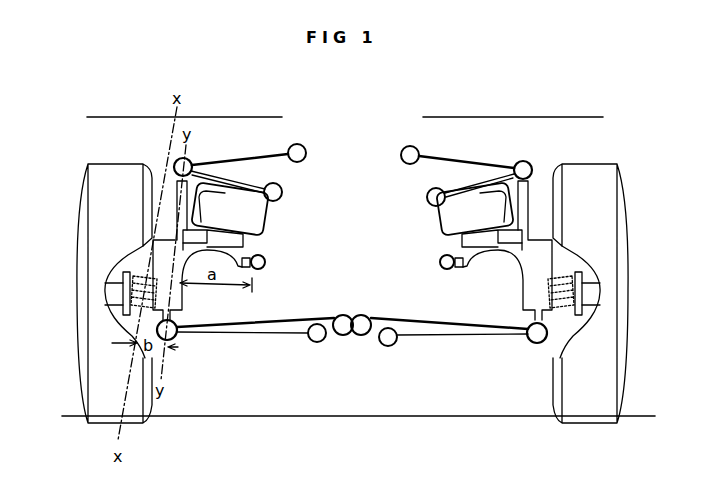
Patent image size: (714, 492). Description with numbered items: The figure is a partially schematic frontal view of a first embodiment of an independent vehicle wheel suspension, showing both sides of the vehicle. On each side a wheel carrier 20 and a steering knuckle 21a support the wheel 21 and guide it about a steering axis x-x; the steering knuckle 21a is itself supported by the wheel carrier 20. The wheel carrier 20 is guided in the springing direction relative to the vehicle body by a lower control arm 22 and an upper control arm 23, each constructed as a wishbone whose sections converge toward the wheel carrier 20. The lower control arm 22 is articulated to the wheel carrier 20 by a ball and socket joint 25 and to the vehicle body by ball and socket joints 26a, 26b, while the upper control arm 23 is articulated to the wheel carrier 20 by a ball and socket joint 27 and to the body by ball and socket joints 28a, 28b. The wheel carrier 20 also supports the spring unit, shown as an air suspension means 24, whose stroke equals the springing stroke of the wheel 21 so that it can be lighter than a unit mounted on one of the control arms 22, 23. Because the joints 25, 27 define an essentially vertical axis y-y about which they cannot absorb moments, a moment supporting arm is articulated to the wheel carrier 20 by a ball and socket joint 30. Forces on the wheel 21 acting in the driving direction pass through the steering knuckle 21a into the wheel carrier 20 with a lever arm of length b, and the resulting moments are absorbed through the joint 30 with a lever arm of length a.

The wheel carrier 20 is at (175, 238).
The wheel 21 is at (100, 182).
The steering knuckle 21a is at (137, 275).
The lower control arm 22 is at (267, 338).
The upper control arm 23 is at (257, 142).
The air suspension means 24 is at (253, 218).
The ball and socket joint 25 is at (173, 340).
The ball and socket joint 26a is at (349, 334).
The ball and socket joint 26b is at (317, 342).
The ball and socket joint 27 is at (188, 158).
The ball and socket joint 28a is at (283, 192).
The ball and socket joint 28b is at (306, 147).
The ball and socket joint 30 is at (265, 267).